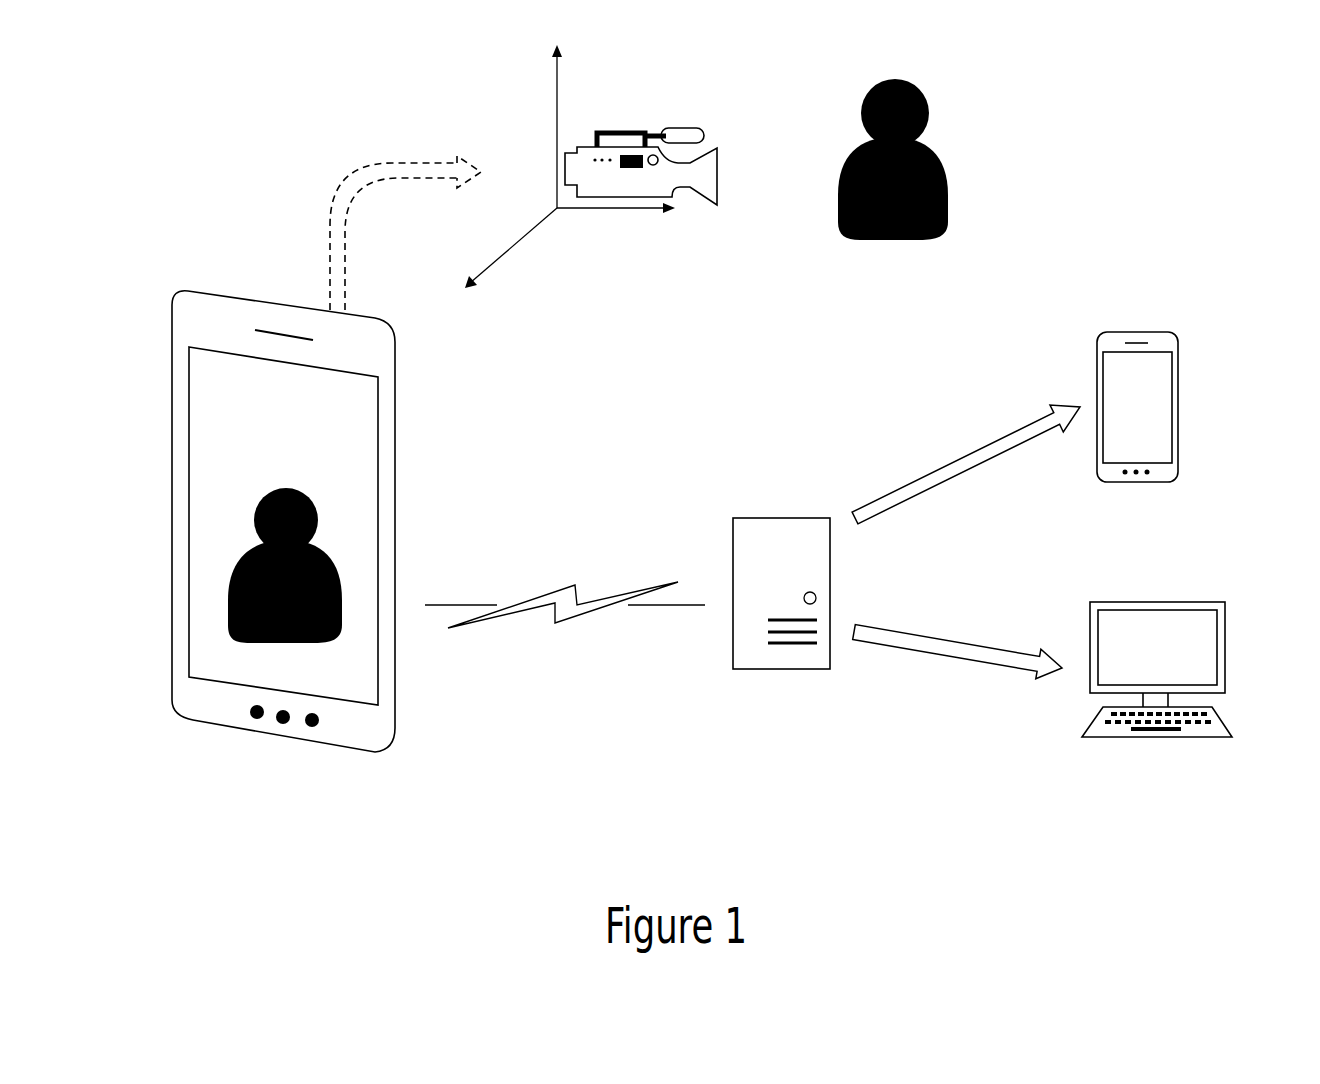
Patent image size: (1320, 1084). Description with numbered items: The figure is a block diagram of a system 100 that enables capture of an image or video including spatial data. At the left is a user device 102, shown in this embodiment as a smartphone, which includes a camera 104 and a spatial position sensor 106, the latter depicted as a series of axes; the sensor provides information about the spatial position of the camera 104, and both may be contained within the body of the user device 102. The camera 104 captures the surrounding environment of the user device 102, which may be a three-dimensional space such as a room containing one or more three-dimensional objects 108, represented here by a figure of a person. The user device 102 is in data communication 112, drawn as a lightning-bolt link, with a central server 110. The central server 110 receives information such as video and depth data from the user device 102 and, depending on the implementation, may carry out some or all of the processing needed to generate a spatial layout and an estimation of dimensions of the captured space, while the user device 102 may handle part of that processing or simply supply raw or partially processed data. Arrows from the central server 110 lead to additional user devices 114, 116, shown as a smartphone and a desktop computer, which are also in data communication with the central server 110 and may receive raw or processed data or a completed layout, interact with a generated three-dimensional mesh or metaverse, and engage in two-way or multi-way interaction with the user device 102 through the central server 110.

The system 100 is at (290, 122).
The user device 102 is at (408, 448).
The camera 104 is at (697, 128).
The spatial position sensor 106 is at (546, 266).
The three-dimensional object 108 is at (935, 152).
The central server 110 is at (782, 517).
The data communication 112 is at (575, 578).
The additional user device 114 is at (1118, 335).
The additional user device 116 is at (1127, 598).